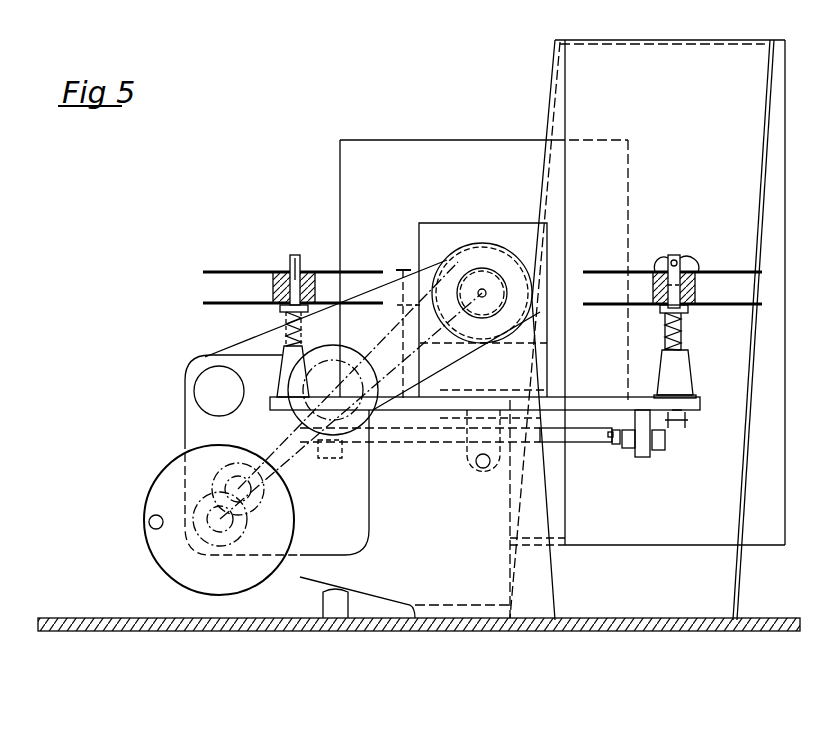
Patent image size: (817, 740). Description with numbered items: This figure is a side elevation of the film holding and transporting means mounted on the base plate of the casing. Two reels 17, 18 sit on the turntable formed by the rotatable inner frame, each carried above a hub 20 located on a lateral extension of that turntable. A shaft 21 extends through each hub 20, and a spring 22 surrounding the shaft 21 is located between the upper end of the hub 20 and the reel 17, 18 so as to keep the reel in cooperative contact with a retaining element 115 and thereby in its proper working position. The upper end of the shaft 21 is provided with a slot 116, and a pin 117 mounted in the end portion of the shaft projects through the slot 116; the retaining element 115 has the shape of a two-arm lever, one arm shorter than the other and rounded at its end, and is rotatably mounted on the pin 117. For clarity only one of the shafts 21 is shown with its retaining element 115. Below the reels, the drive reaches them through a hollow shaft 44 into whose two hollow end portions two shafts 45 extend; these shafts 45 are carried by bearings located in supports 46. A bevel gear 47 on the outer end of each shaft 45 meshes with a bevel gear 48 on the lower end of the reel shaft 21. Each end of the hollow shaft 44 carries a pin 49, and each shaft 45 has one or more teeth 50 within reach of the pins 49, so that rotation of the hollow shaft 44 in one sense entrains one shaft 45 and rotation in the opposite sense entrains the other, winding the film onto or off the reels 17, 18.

The reel 17 is at (293, 271).
The reel 18 is at (717, 271).
The hub 20 is at (688, 372).
The shaft 21 is at (686, 337).
The spring 22 is at (688, 316).
The hollow shaft 44 is at (413, 446).
The shaft 45 is at (590, 446).
The support 46 is at (645, 458).
The bevel gear 47 is at (664, 448).
The bevel gear 48 is at (685, 428).
The pin 49 is at (617, 449).
The tooth 50 is at (612, 430).
The retaining element 115 is at (689, 262).
The slot 116 is at (297, 255).
The pin 117 is at (299, 265).